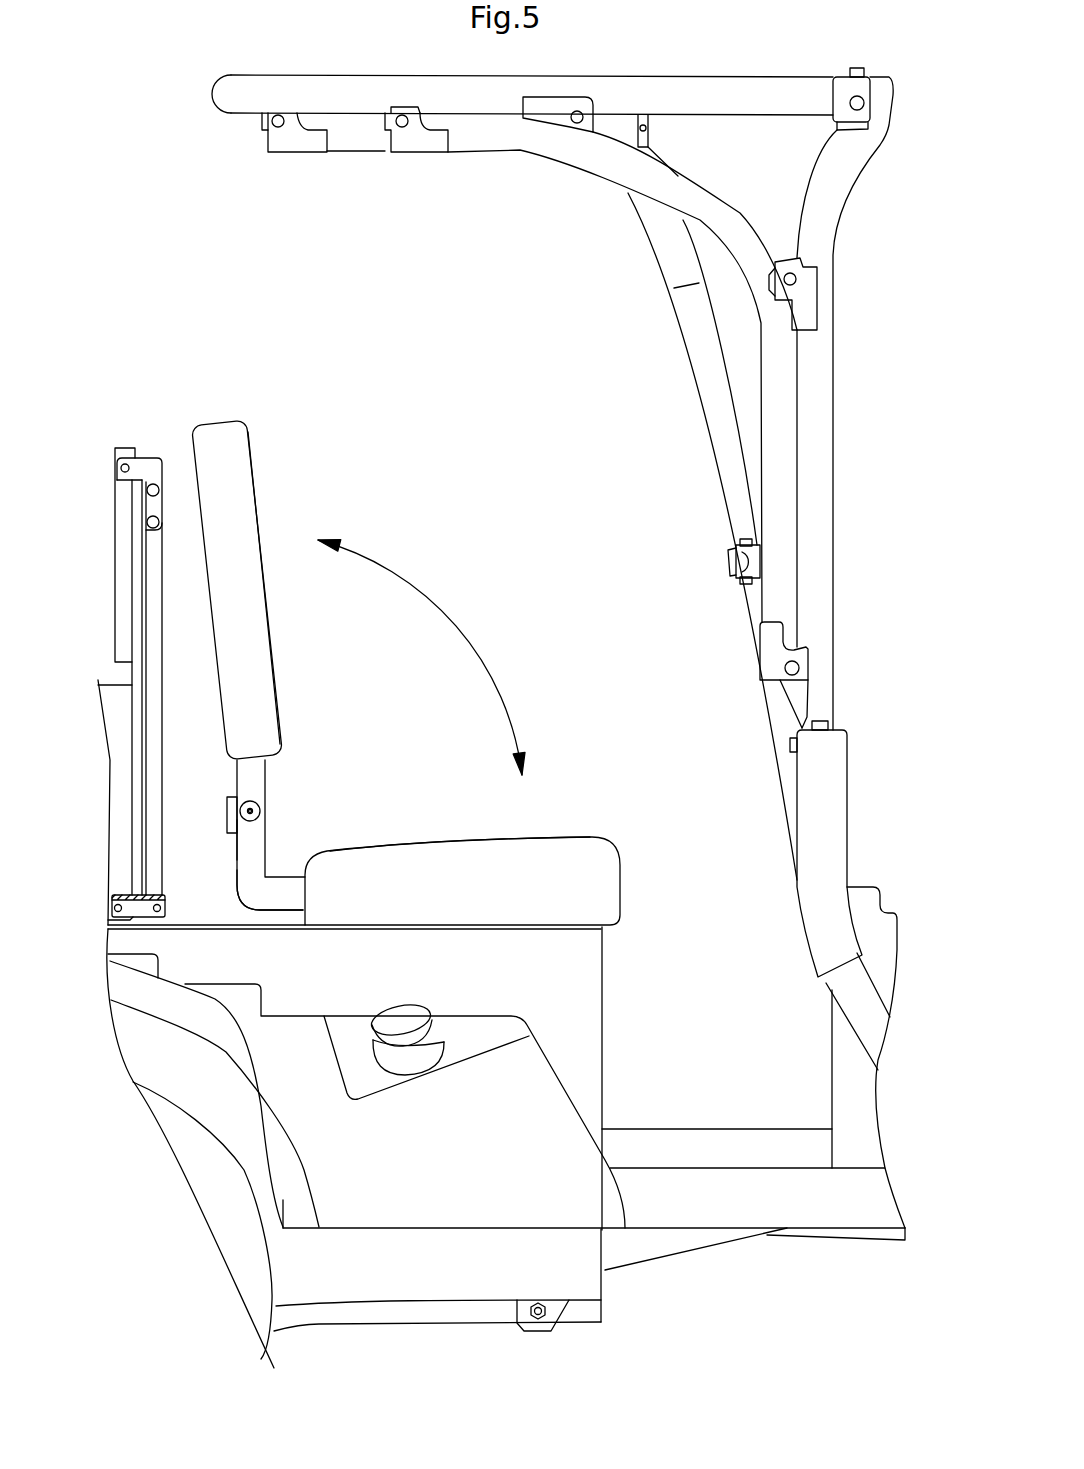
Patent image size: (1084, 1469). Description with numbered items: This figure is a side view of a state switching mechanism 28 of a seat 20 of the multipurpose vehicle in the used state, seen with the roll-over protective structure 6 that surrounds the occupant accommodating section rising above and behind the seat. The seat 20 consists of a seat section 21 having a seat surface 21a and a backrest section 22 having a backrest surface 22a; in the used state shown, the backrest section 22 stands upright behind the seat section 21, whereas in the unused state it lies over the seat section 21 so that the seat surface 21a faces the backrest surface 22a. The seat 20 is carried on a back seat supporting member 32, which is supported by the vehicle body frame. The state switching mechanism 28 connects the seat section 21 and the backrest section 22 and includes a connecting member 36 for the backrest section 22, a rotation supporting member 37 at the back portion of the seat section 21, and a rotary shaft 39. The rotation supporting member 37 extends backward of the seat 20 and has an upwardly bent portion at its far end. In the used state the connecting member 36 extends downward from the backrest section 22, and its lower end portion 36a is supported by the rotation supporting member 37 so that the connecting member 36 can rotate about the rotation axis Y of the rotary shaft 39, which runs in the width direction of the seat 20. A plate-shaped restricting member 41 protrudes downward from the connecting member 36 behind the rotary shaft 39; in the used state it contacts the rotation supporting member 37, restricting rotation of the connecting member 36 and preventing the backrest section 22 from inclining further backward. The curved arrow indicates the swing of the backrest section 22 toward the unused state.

The roll-over protective structure (ROPS) 6 is at (208, 87).
The seat 20 is at (469, 602).
The seat section 21 is at (612, 885).
The seat surface 21a is at (557, 833).
The backrest section 22 is at (222, 416).
The backrest surface 22a is at (253, 478).
The state switching mechanism 28 is at (360, 798).
The back seat supporting member 32 is at (592, 990).
The connecting member 36 is at (255, 772).
The lower end portion 36a is at (253, 822).
The rotation supporting member 37 is at (246, 872).
The rotary shaft 39 is at (253, 806).
The restricting member 41 is at (227, 813).
The rotation axis Y is at (262, 812).